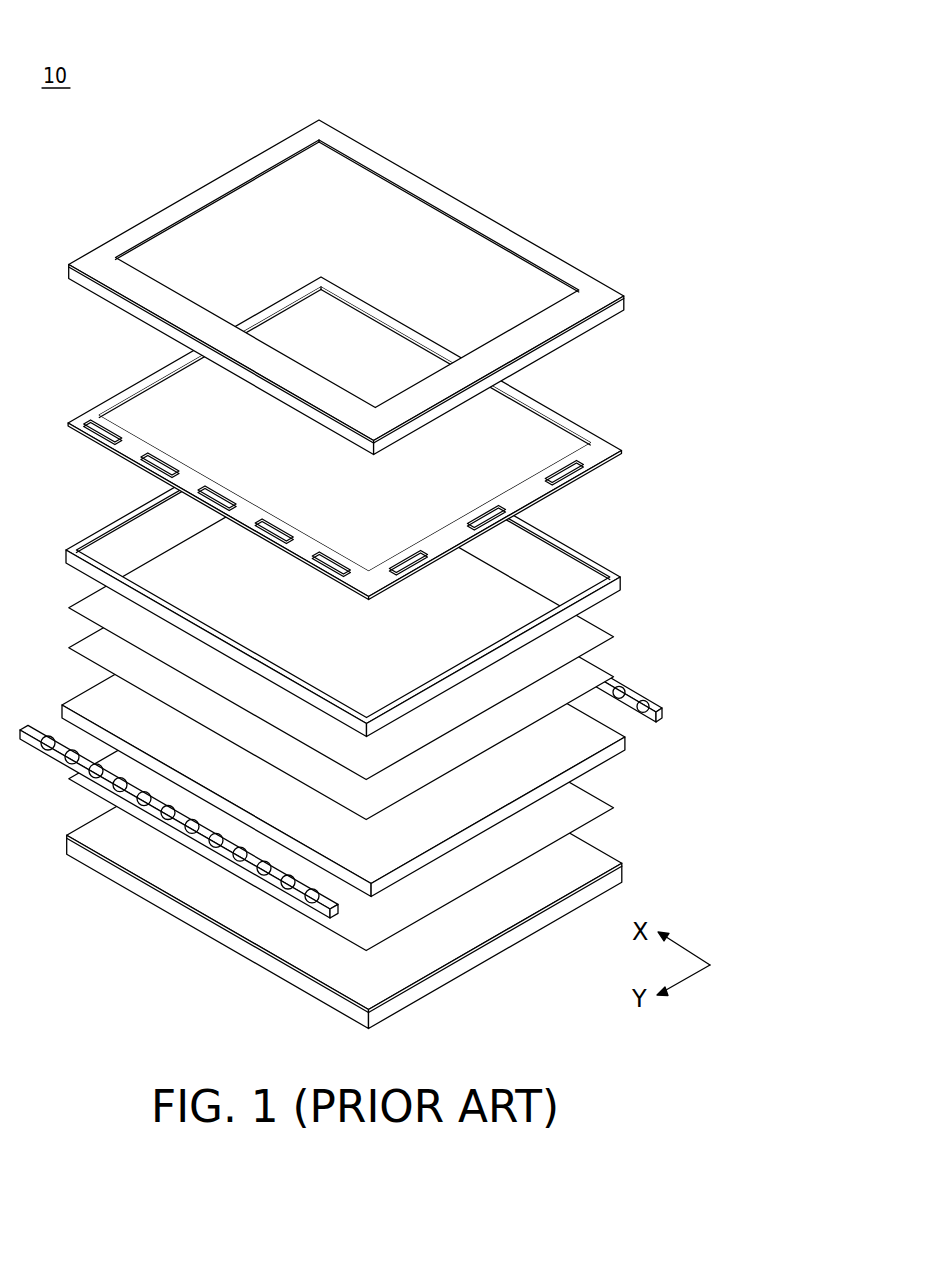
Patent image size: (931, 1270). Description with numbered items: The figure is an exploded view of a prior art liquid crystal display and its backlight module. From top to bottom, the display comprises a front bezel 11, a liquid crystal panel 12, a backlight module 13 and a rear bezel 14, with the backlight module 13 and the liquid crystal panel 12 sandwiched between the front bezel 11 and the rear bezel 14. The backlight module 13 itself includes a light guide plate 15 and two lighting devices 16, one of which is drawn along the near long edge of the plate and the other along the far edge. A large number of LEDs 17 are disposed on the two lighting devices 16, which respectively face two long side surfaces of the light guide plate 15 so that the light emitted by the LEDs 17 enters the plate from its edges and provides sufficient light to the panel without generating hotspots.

The front bezel 11 is at (624, 302).
The liquid crystal panel 12 is at (621, 452).
The backlight module 13 is at (400, 727).
The rear bezel 14 is at (470, 947).
The light guide plate 15 is at (595, 757).
The lighting devices 16 is at (668, 713).
The LEDs 17 is at (50, 734).